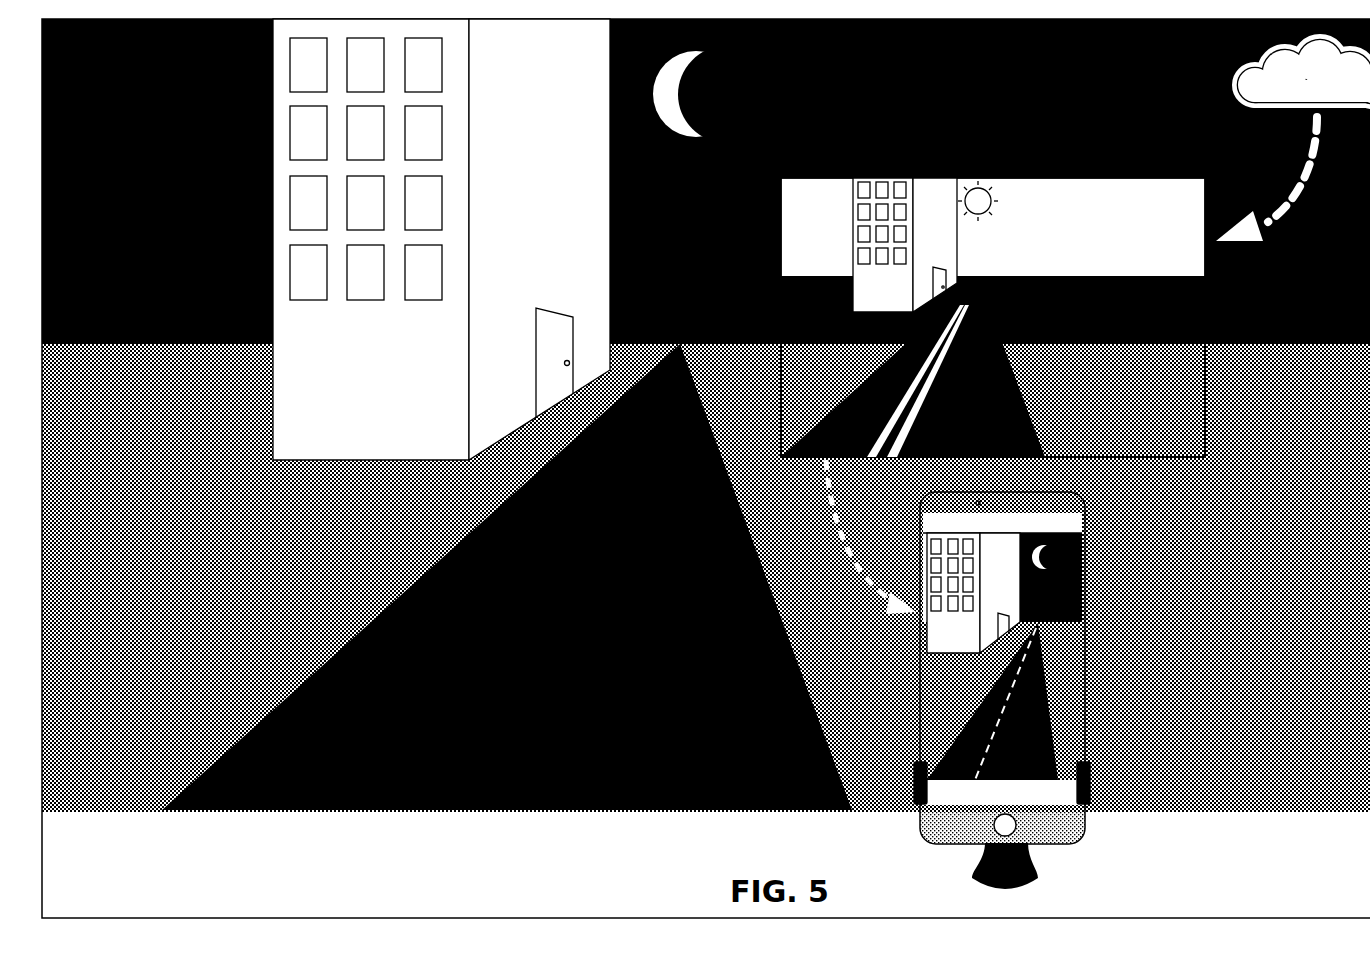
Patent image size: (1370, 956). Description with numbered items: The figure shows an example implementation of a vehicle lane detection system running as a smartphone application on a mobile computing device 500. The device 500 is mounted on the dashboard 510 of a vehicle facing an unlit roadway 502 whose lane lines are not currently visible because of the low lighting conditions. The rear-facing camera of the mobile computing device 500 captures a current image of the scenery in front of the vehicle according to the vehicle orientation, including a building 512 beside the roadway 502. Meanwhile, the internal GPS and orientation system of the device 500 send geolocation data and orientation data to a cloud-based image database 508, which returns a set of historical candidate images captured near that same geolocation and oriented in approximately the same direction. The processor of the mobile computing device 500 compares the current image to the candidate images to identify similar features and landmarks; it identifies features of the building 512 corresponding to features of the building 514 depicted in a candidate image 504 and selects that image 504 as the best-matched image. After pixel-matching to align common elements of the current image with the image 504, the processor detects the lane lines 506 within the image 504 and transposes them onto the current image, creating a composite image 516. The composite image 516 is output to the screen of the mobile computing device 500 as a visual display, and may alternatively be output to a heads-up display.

The mobile computing device 500 is at (1037, 690).
The roadway 502 is at (584, 740).
The candidate image 504 is at (993, 317).
The lane lines 506 is at (920, 404).
The cloud-based image database 508 is at (1333, 92).
The dashboard 510 is at (1243, 866).
The building 512 is at (558, 113).
The building 514 is at (960, 236).
The composite image 516 is at (1068, 534).